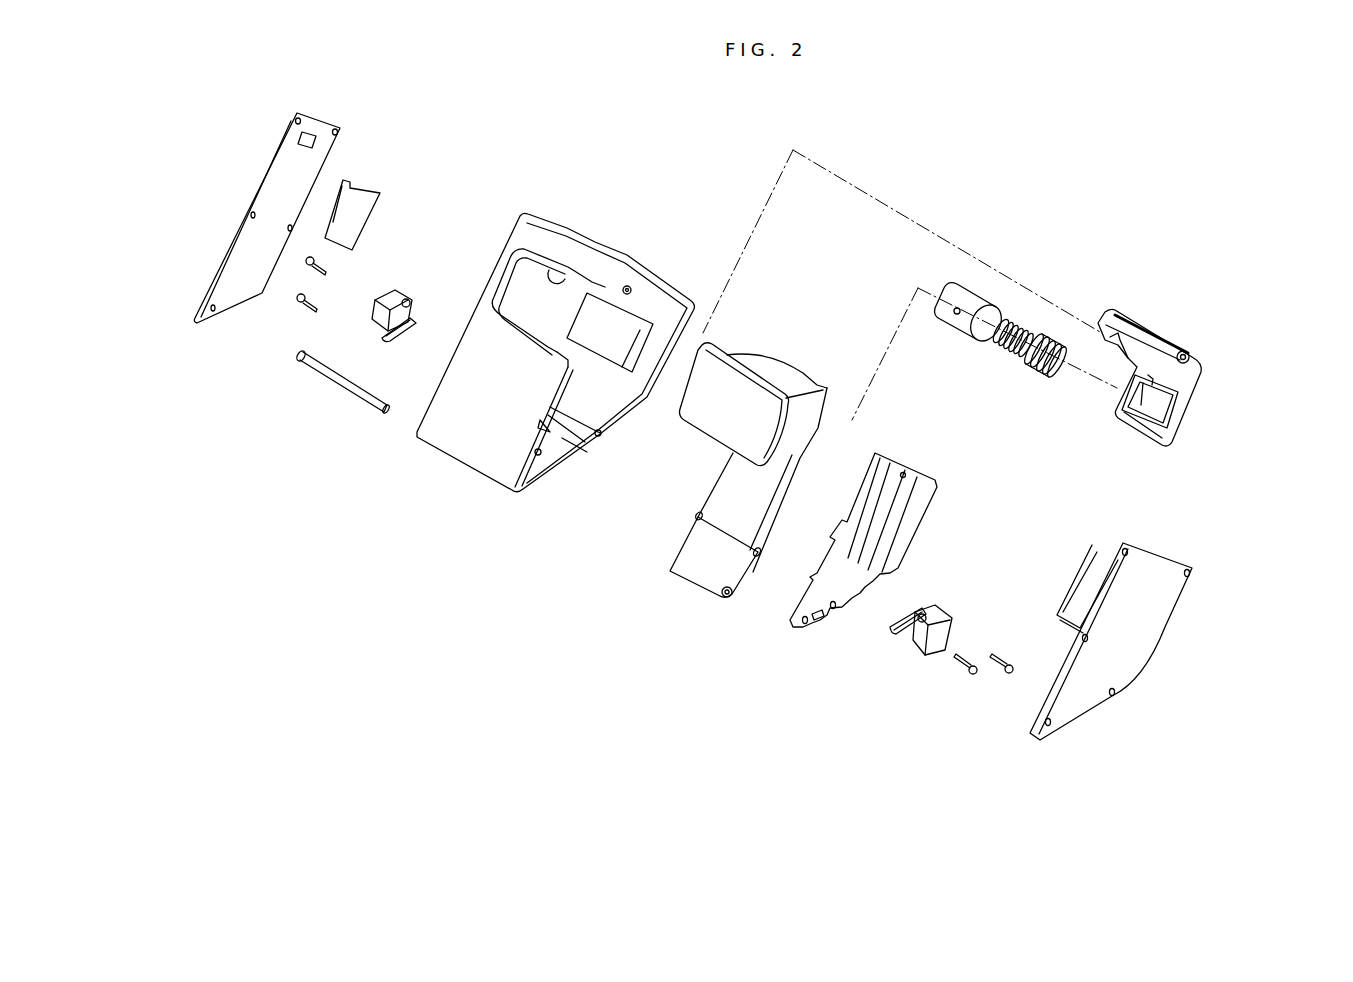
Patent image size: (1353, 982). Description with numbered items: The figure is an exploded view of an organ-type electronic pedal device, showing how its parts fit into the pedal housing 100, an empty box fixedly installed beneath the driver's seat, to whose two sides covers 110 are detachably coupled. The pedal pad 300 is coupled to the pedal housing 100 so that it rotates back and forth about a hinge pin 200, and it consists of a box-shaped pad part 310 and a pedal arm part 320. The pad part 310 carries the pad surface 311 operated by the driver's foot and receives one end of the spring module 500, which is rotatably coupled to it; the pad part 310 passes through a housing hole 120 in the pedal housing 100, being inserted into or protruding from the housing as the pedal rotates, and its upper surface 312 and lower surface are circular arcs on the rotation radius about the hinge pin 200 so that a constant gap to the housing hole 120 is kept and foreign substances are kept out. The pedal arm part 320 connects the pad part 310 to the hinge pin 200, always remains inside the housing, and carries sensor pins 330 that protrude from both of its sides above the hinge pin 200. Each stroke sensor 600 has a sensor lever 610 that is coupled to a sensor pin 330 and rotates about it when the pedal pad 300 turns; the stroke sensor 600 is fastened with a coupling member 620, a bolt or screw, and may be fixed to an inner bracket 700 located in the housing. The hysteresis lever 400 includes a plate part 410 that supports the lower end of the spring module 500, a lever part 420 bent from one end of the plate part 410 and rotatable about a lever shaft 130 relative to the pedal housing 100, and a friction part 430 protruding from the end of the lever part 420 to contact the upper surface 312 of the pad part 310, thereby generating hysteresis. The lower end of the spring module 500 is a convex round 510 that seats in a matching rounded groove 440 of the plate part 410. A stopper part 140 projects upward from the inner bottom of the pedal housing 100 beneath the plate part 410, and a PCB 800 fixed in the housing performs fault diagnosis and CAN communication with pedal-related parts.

The pedal housing 100 is at (549, 365).
The cover 110 is at (272, 198).
The housing hole 120 is at (556, 283).
The lever shaft 130 is at (628, 287).
The stopper part 140 is at (607, 333).
The hinge pin 200 is at (333, 370).
The pedal pad 300 is at (716, 451).
The pad part 310 is at (818, 400).
The pad surface 311 is at (755, 388).
The upper surface 312 is at (793, 375).
The pedal arm part 320 is at (702, 575).
The sensor pin 330 is at (758, 555).
The hysteresis lever 400 is at (1182, 366).
The plate part 410 is at (1182, 418).
The lever part 420 is at (1165, 348).
The friction part 430 is at (1100, 328).
The rounded groove 440 is at (1143, 413).
The spring module 500 is at (1003, 350).
The round 510 is at (1053, 367).
The stroke sensor 600 is at (387, 293).
The sensor lever 610 is at (400, 337).
The coupling member 620 is at (313, 267).
The inner bracket 700 is at (897, 510).
The PCB 800 is at (365, 195).